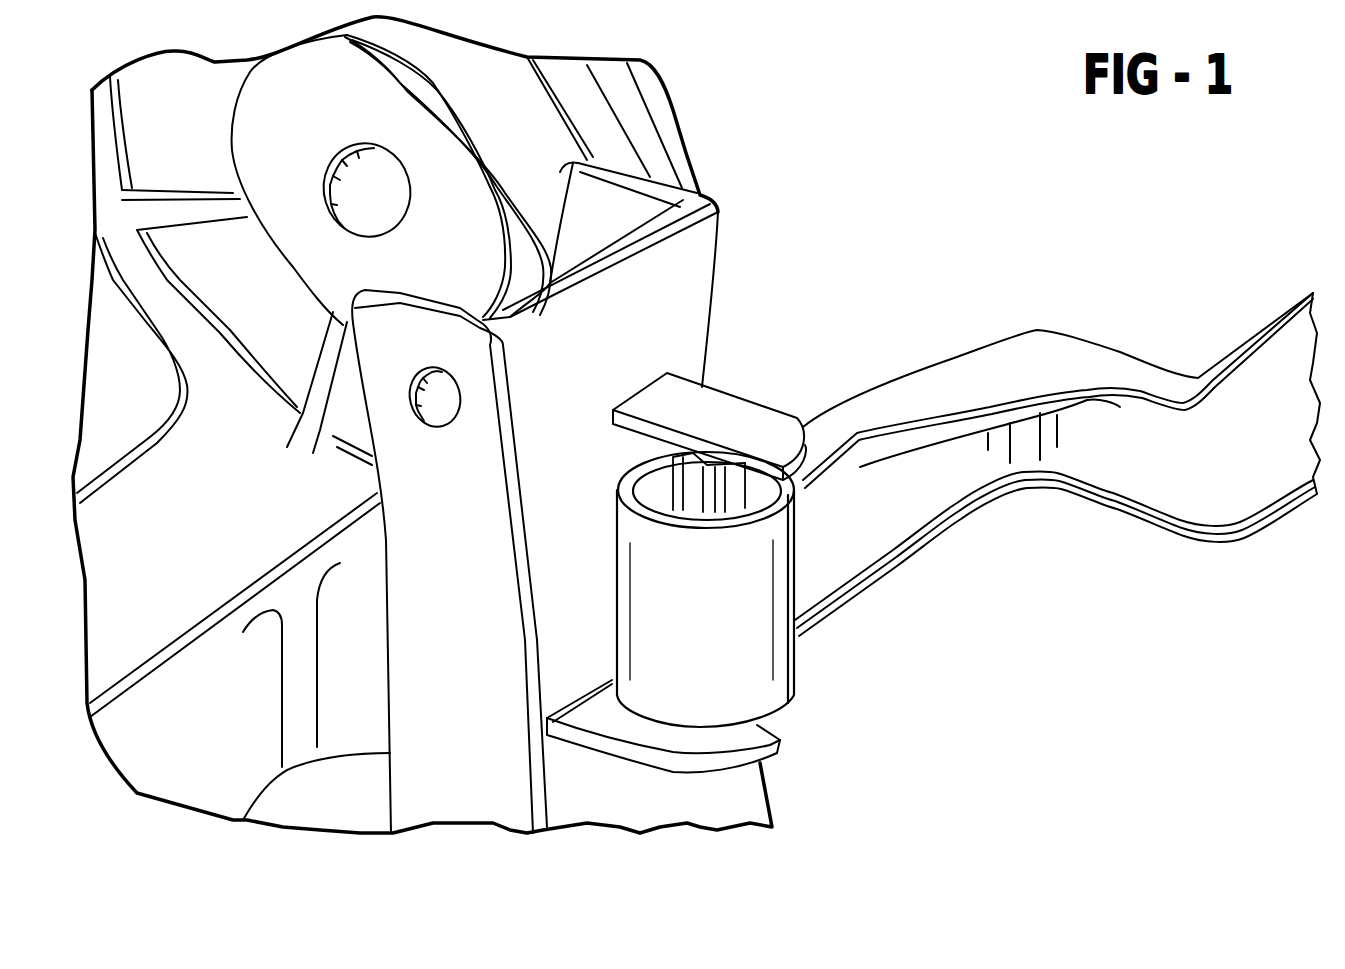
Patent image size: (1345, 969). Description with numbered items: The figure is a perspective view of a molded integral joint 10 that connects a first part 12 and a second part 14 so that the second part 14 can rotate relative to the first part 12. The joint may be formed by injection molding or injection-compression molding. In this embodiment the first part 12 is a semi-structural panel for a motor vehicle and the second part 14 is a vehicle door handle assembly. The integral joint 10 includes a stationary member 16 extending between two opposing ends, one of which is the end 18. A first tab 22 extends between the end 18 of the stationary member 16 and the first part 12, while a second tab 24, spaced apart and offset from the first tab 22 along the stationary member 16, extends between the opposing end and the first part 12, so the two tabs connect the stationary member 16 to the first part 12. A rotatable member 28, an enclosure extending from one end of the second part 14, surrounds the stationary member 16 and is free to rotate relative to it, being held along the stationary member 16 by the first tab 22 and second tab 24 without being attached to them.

The integral joint 10 is at (756, 544).
The first part 12 is at (703, 237).
The second part 14 is at (1237, 470).
The stationary member 16 is at (717, 493).
The end of the stationary member 18 is at (702, 463).
The first tab 22 is at (767, 418).
The second tab 24 is at (700, 740).
The rotatable member 28 is at (767, 573).